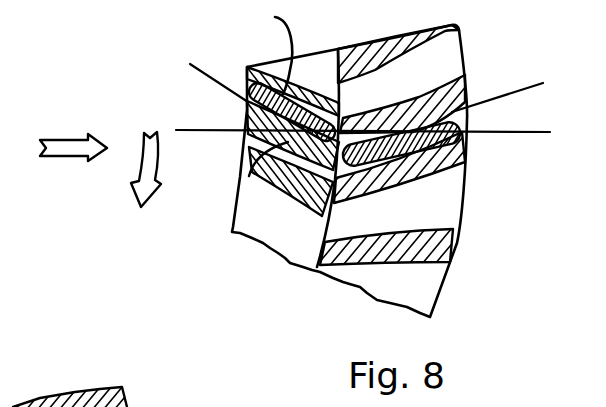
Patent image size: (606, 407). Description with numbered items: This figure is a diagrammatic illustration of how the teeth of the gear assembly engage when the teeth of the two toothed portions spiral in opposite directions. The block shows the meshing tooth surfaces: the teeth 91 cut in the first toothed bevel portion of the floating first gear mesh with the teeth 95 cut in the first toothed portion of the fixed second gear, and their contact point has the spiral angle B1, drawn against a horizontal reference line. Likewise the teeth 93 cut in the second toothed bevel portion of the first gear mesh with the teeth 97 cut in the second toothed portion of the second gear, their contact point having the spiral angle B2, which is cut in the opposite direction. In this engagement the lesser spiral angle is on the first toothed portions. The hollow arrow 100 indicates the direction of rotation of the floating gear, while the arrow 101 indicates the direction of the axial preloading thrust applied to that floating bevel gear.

The teeth 91 is at (459, 35).
The teeth 93 is at (248, 175).
The teeth 95 is at (455, 152).
The teeth 97 is at (266, 52).
The arrow 100 is at (137, 165).
The arrow 101 is at (63, 137).
The spiral angle B1 is at (543, 85).
The spiral angle B2 is at (191, 70).